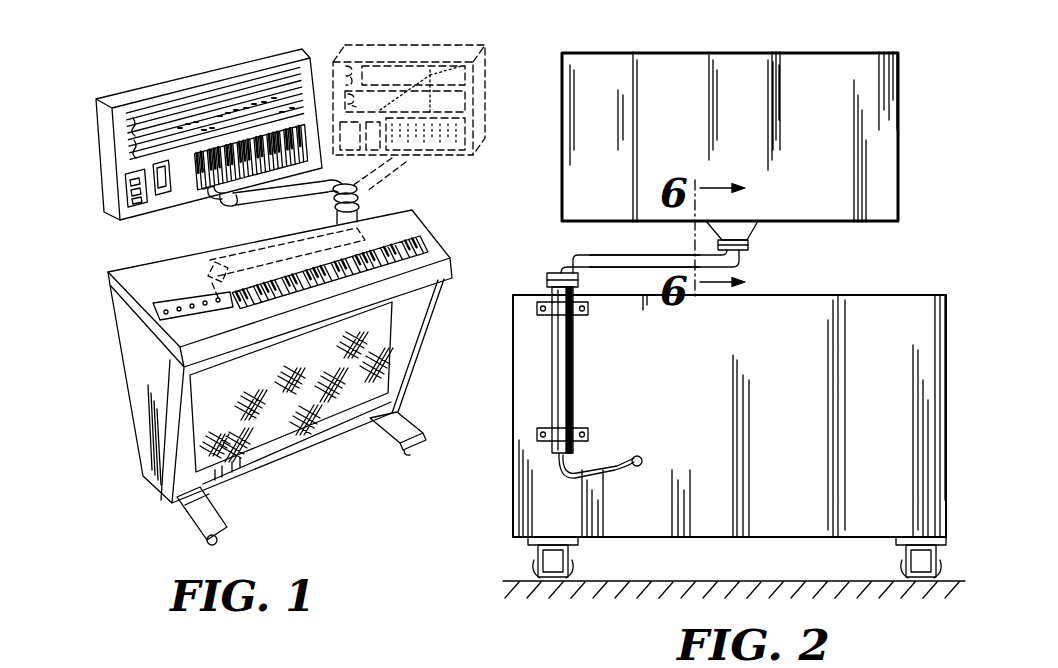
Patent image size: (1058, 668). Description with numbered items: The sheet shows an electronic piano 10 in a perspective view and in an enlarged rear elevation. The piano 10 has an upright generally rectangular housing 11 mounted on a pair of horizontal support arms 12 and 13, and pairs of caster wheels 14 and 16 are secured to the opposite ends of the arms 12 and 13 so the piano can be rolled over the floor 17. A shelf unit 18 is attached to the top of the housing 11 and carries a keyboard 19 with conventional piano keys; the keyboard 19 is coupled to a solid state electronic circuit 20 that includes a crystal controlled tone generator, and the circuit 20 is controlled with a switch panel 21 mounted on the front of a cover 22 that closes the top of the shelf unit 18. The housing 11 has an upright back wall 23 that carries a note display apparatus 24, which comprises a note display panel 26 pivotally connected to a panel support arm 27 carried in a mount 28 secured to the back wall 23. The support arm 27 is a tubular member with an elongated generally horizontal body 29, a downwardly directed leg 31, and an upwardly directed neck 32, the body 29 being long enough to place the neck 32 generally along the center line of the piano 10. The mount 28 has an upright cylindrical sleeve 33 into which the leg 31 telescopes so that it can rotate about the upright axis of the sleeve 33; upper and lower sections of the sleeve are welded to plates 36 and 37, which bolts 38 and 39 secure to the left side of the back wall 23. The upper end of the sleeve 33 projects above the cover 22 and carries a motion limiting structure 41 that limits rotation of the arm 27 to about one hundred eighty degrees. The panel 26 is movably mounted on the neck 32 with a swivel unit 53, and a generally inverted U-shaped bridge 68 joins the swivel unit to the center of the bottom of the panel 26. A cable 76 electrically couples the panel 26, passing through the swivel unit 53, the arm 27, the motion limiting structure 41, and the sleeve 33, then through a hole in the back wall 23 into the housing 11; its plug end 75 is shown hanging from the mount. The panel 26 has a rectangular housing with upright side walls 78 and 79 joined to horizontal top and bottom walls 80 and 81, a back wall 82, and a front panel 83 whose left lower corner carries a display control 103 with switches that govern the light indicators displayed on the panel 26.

In FIG. 1, the electronic piano 10 is at (263, 386).
In FIG. 2, the electronic piano 10 is at (729, 411).
In FIG. 1, the housing 11 is at (255, 356).
In FIG. 1, the horizontal support arm 12 is at (206, 525).
In FIG. 2, the horizontal support arm 12 is at (915, 557).
In FIG. 1, the horizontal support arm 13 is at (418, 449).
In FIG. 2, the horizontal support arm 13 is at (549, 557).
In FIG. 1, the caster wheels 14 is at (218, 539).
In FIG. 2, the caster wheels 14 is at (936, 578).
In FIG. 1, the caster wheels 16 is at (410, 449).
In FIG. 2, the caster wheels 16 is at (538, 578).
In FIG. 2, the floor 17 is at (726, 580).
In FIG. 1, the shelf unit 18 is at (140, 318).
In FIG. 1, the keyboard 19 is at (400, 274).
In FIG. 1, the solid state electronic circuit 20 is at (204, 272).
In FIG. 1, the switch panel 21 is at (160, 307).
In FIG. 1, the cover 22 is at (109, 277).
In FIG. 2, the back wall 23 is at (936, 354).
In FIG. 1, the note display apparatus 24 is at (190, 133).
In FIG. 2, the note display apparatus 24 is at (748, 137).
In FIG. 1, the note display panel 26 is at (299, 132).
In FIG. 2, the note display panel 26 is at (748, 137).
In FIG. 1, the panel support arm 27 is at (320, 203).
In FIG. 2, the panel support arm 27 is at (649, 234).
In FIG. 1, the mount 28 is at (405, 208).
In FIG. 2, the mount 28 is at (587, 386).
In FIG. 1, the body 29 is at (319, 194).
In FIG. 2, the body 29 is at (672, 257).
In FIG. 2, the leg 31 is at (566, 262).
In FIG. 1, the neck 32 is at (240, 208).
In FIG. 2, the neck 32 is at (742, 262).
In FIG. 2, the sleeve 33 is at (576, 404).
In FIG. 2, the plate 36 is at (576, 330).
In FIG. 2, the plate 37 is at (578, 416).
In FIG. 2, the bolts 38 is at (541, 318).
In FIG. 2, the bolts 39 is at (544, 429).
In FIG. 1, the motion limiting structure 41 is at (360, 200).
In FIG. 2, the motion limiting structure 41 is at (533, 278).
In FIG. 1, the swivel unit 53 is at (220, 207).
In FIG. 2, the swivel unit 53 is at (750, 244).
In FIG. 1, the bridge 68 is at (208, 198).
In FIG. 2, the bridge 68 is at (737, 226).
In FIG. 2, the plug 75 is at (645, 463).
In FIG. 2, the cable 76 is at (614, 476).
In FIG. 1, the side wall 78 is at (98, 123).
In FIG. 2, the side wall 78 is at (900, 166).
In FIG. 1, the side wall 79 is at (306, 56).
In FIG. 2, the side wall 79 is at (560, 166).
In FIG. 1, the top wall 80 is at (188, 76).
In FIG. 2, the top wall 80 is at (686, 53).
In FIG. 1, the bottom wall 81 is at (118, 216).
In FIG. 2, the bottom wall 81 is at (882, 223).
In FIG. 2, the back wall 82 is at (812, 66).
In FIG. 1, the front panel 83 is at (246, 92).
In FIG. 1, the display control 103 is at (118, 192).